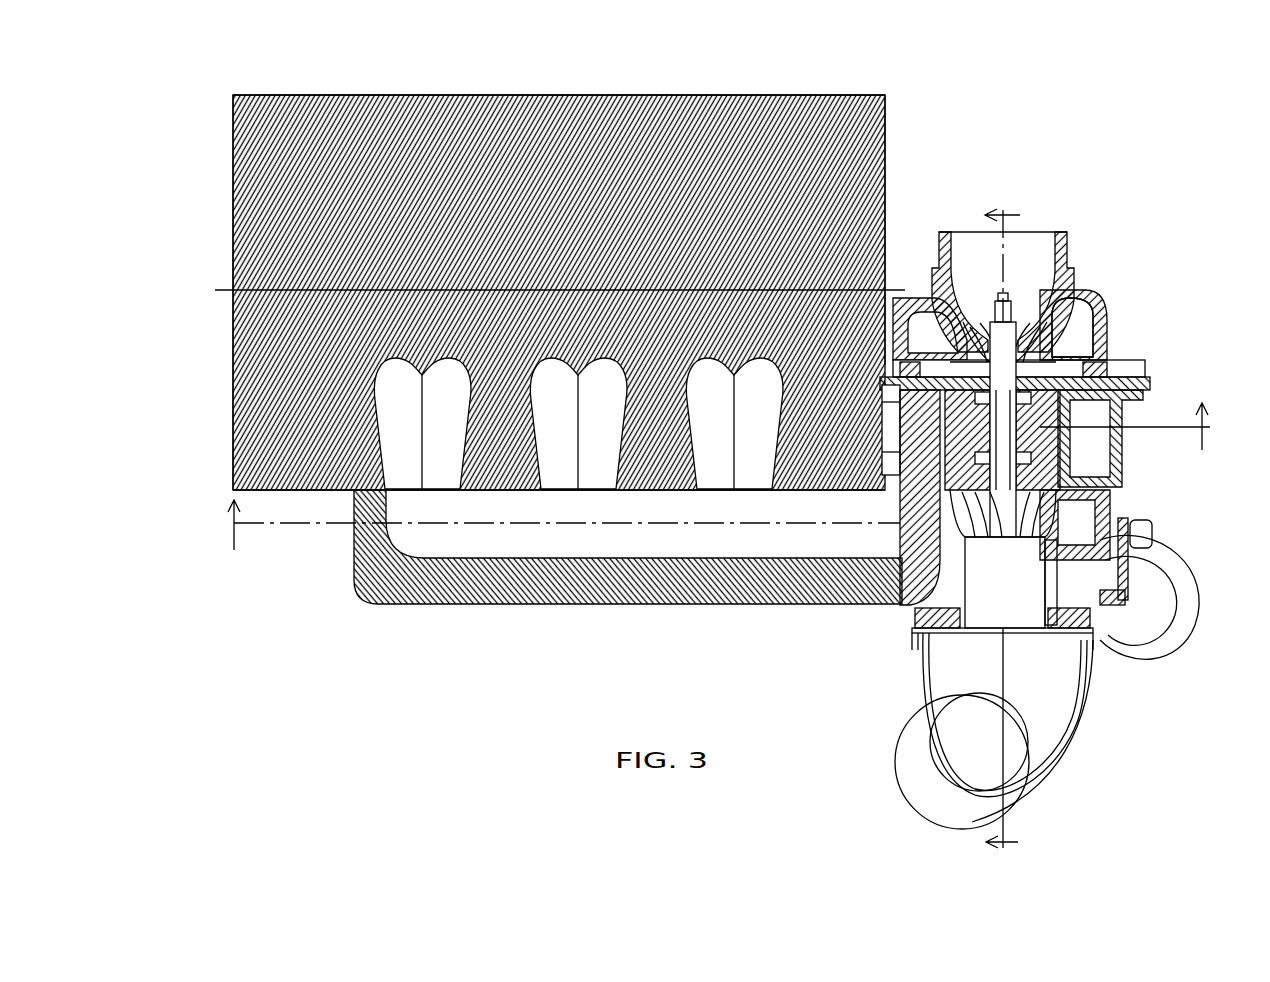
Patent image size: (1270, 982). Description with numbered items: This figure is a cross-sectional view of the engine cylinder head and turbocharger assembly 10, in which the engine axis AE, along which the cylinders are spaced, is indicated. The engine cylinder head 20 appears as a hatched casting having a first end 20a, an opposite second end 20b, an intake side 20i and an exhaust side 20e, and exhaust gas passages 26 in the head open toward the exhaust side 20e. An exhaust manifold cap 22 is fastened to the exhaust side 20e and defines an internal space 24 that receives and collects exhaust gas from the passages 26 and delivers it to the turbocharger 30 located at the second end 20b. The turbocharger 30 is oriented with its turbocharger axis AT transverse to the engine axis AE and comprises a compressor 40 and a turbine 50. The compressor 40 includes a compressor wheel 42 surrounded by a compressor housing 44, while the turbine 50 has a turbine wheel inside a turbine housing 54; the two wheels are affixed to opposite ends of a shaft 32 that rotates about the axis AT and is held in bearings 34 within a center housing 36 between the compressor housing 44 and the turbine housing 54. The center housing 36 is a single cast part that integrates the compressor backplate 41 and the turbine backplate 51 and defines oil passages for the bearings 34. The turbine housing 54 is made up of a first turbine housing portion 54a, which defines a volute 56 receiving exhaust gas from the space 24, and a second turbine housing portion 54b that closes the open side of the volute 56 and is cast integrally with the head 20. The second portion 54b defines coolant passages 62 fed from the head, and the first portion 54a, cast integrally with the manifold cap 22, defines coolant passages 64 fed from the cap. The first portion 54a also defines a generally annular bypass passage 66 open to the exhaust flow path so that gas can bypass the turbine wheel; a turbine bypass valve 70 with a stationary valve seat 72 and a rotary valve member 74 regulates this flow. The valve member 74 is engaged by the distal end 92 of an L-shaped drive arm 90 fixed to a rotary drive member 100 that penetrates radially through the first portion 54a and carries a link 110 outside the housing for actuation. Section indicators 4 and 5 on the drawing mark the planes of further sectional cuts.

The engine cylinder head and turbocharger assembly 10 is at (395, 660).
The engine cylinder head 20 is at (865, 140).
The first end 20a is at (232, 220).
The second end 20b is at (885, 232).
The exhaust side 20e is at (248, 492).
The intake side 20i is at (495, 95).
The exhaust manifold 22 is at (372, 588).
The internal space 24 is at (515, 560).
The exhaust gas passages 26 is at (440, 435).
The turbocharger 30 is at (1115, 335).
The shaft 32 is at (1062, 406).
The bearings 34 is at (1063, 450).
The center housing 36 is at (915, 470).
The compressor 40 is at (1028, 295).
The backplate for the compressor 41 is at (1045, 352).
The compressor wheel 42 is at (985, 335).
The compressor housing 44 is at (1108, 345).
The turbine 50 is at (992, 632).
The backplate for the turbine 51 is at (997, 633).
The turbine housing 54 is at (1110, 505).
The first turbine housing portion 54a is at (918, 620).
The second turbine housing portion 54b is at (1140, 392).
The volute 56 is at (903, 520).
The coolant passages 62 is at (1095, 450).
The coolant passages 64 is at (1095, 512).
The bypass passage 66 is at (912, 618).
The turbine bypass valve 70 is at (1062, 636).
The valve seat 72 is at (932, 650).
The rotary valve member 74 is at (1110, 610).
The L-shaped drive arm 90 is at (1118, 595).
The distal end 92 is at (1048, 625).
The rotary drive member 100 is at (1140, 605).
The link 110 is at (1135, 568).
The section line 4- 4 is at (718, 473).
The section line 5- 5 is at (1002, 531).
The engine axis AE is at (896, 290).
The turbocharger axis AT is at (1005, 665).